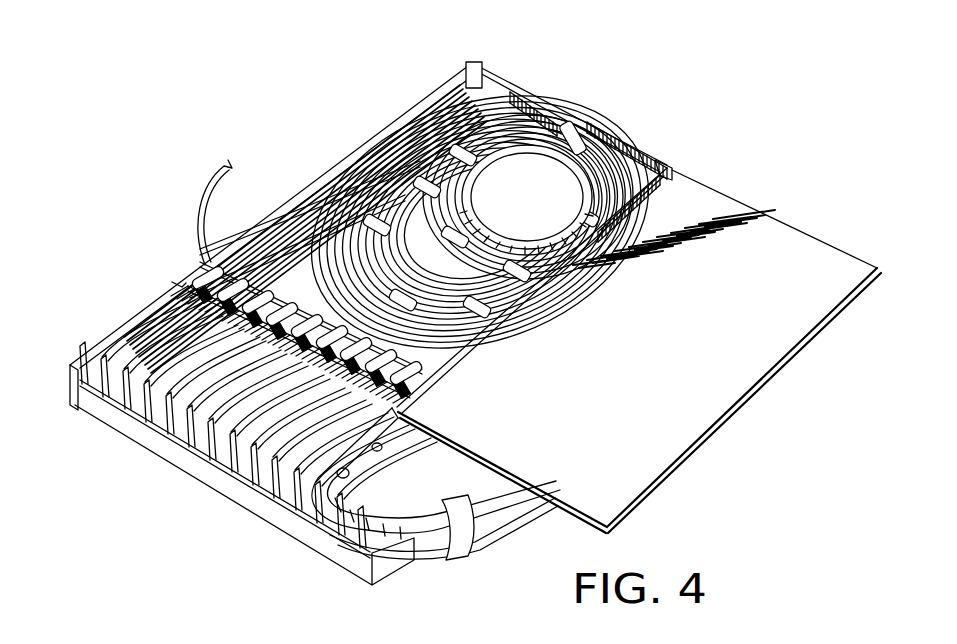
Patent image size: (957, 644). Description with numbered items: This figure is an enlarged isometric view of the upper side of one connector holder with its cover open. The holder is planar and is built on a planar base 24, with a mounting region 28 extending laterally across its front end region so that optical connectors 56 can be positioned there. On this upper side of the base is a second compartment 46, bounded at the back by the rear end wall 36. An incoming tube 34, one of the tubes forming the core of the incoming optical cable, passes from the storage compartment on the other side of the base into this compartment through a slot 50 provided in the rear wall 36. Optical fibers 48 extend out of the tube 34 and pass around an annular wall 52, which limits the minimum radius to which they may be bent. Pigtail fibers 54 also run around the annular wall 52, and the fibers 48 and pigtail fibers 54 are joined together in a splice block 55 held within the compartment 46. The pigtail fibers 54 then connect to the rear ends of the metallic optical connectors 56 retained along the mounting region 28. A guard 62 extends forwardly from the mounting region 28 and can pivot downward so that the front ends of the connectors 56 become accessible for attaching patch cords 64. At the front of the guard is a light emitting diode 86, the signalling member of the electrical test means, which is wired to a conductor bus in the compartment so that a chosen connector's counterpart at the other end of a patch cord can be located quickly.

The planar base 24 is at (270, 226).
The mounting region 28 is at (271, 282).
The tube 34 is at (202, 188).
The rear end wall 36 is at (510, 85).
The second compartment 46 is at (465, 115).
The optical fibers 48 is at (472, 66).
The slot 50 is at (560, 128).
The annular wall 52 is at (580, 178).
The pigtail fibers 54 is at (435, 376).
The splice block 55 is at (390, 162).
The optical connectors 56 is at (236, 273).
The guard 62 is at (208, 476).
The patch cords 64 is at (500, 514).
The light emitting diode 86 is at (70, 400).